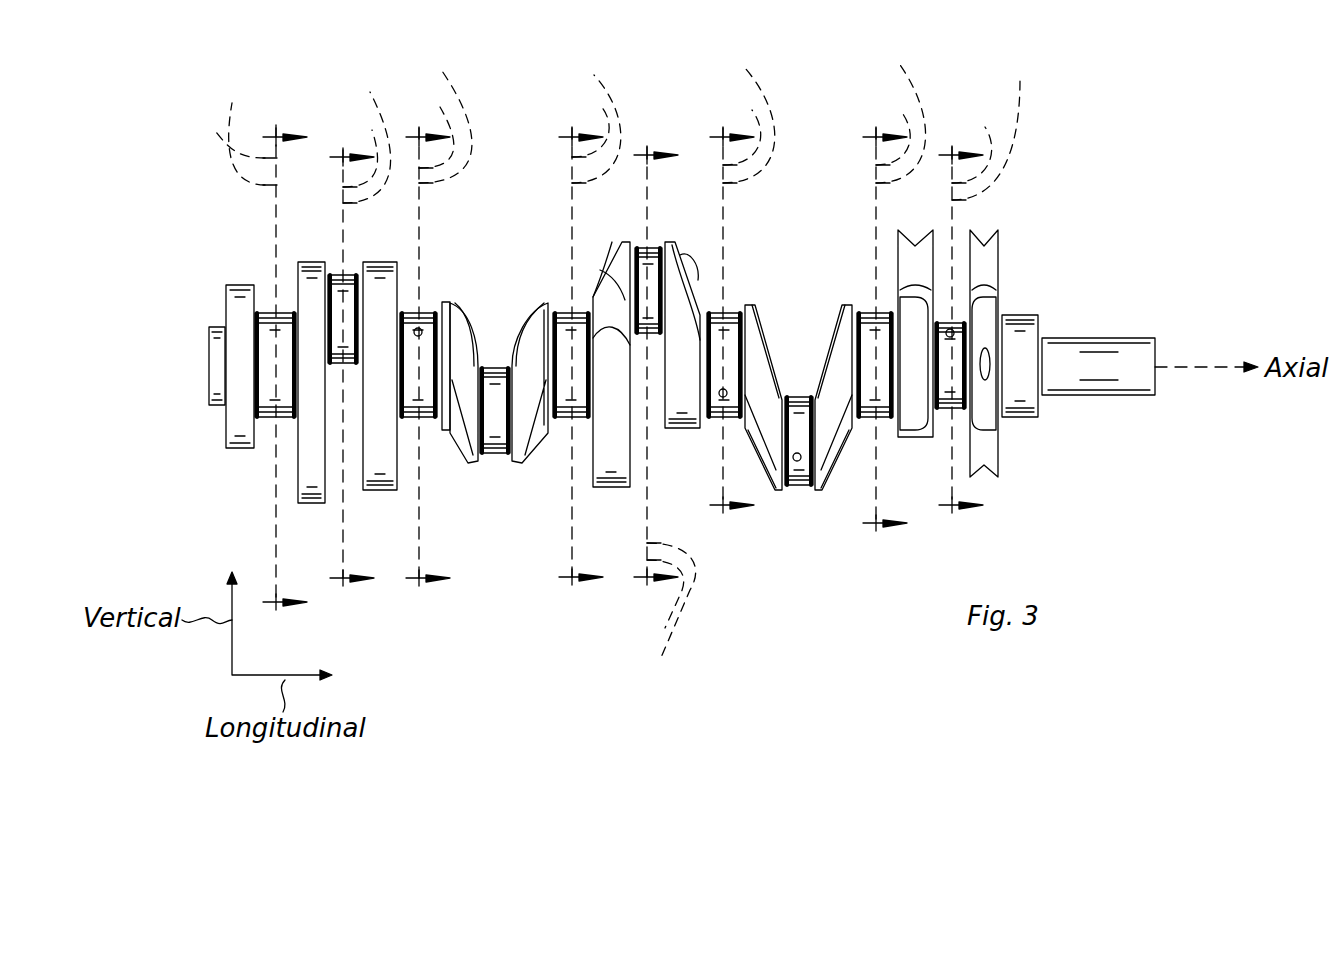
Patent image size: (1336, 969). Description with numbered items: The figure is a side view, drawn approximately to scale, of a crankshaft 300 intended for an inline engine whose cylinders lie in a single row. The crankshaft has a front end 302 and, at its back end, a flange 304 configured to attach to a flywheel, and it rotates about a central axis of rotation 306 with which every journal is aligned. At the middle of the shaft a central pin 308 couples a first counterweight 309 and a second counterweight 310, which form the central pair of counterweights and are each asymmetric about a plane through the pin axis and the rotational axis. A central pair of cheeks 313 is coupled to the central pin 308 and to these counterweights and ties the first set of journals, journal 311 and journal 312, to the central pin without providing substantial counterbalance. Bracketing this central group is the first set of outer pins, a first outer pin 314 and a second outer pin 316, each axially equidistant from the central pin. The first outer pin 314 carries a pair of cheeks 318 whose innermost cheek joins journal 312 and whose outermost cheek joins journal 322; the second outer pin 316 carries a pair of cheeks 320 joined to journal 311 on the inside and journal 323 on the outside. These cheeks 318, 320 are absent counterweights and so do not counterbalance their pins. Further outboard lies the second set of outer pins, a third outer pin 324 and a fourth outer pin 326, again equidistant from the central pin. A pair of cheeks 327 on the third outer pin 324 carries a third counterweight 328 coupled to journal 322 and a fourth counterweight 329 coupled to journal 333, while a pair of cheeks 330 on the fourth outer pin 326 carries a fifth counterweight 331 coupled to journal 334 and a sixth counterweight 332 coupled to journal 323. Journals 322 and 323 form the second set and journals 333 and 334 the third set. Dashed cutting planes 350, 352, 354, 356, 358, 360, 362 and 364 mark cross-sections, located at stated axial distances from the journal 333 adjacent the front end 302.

The crankshaft 300 is at (222, 207).
The front end 302 is at (1143, 340).
The flange 304 is at (210, 322).
The central axis of rotation 306 is at (1197, 365).
The central pin 308 is at (650, 247).
The first counterweight 309 is at (618, 488).
The second counterweight 310 is at (685, 428).
The journal 311 is at (566, 313).
The journal 312 is at (733, 317).
The central pair of cheeks 313 is at (611, 297).
The first outer pin 314 is at (803, 486).
The second outer pin 316 is at (490, 453).
The pair of cheeks 318 is at (765, 357).
The pair of cheeks 320 is at (462, 330).
The journal 322 is at (873, 315).
The journal 323 is at (414, 330).
The third outer pin 324 is at (947, 405).
The fourth outer pin 326 is at (338, 273).
The pair of cheeks 327 is at (910, 367).
The third counterweight 328 is at (918, 232).
The fourth counterweight 329 is at (985, 232).
The pair of cheeks 330 is at (310, 333).
The fifth counterweight 331 is at (317, 504).
The sixth counterweight 332 is at (378, 491).
The journal 333 is at (1017, 316).
The journal 334 is at (267, 312).
The cutting plane 350 is at (237, 342).
The cutting plane 352 is at (343, 324).
The cutting plane 354 is at (419, 312).
The cutting plane 356 is at (573, 315).
The cutting plane 358 is at (641, 416).
The cutting plane 360 is at (716, 275).
The cutting plane 362 is at (870, 281).
The cutting plane 364 is at (982, 281).